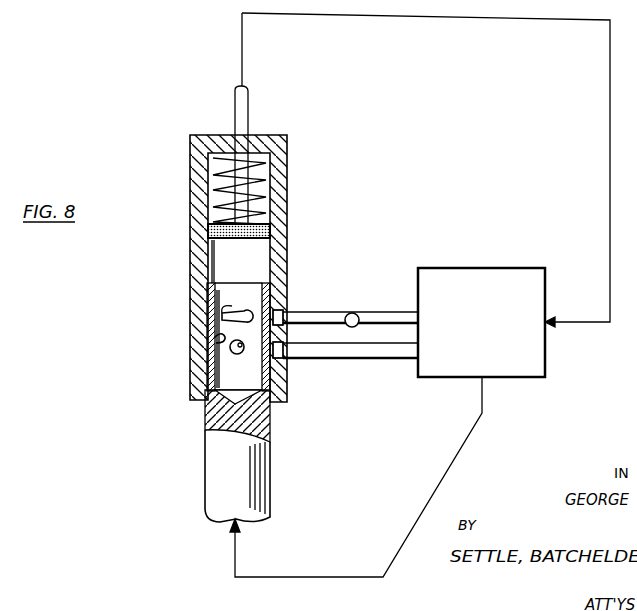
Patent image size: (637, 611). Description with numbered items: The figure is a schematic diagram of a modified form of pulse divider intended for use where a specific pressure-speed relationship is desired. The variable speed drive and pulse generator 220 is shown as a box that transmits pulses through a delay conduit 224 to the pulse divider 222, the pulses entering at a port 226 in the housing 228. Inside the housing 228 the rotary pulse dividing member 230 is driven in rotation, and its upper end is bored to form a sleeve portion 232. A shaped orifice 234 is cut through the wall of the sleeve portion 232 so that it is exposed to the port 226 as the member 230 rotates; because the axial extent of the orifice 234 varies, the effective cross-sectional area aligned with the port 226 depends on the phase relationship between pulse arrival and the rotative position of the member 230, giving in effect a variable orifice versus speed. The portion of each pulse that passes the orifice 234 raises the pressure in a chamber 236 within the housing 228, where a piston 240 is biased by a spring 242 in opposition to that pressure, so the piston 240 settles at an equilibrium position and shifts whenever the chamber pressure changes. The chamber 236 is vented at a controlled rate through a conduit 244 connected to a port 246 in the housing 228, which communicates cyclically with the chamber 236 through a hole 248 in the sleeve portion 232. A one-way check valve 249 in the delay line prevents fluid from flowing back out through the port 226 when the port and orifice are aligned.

The variable speed drive and pulse generator 220 is at (500, 330).
The pulse divider 222 is at (287, 186).
The delay conduit 224 is at (337, 322).
The port 226 is at (280, 312).
The housing 228 is at (194, 388).
The rotary pulse dividing member 230 is at (258, 472).
The sleeve portion 232 is at (214, 338).
The shaped orifice 234 is at (228, 311).
The chamber 236 is at (256, 270).
The piston 240 is at (262, 240).
The spring 242 is at (252, 158).
The conduit 244 is at (368, 352).
The port 246 is at (280, 356).
The hole 248 is at (231, 352).
The one-way check valve 249 is at (352, 313).